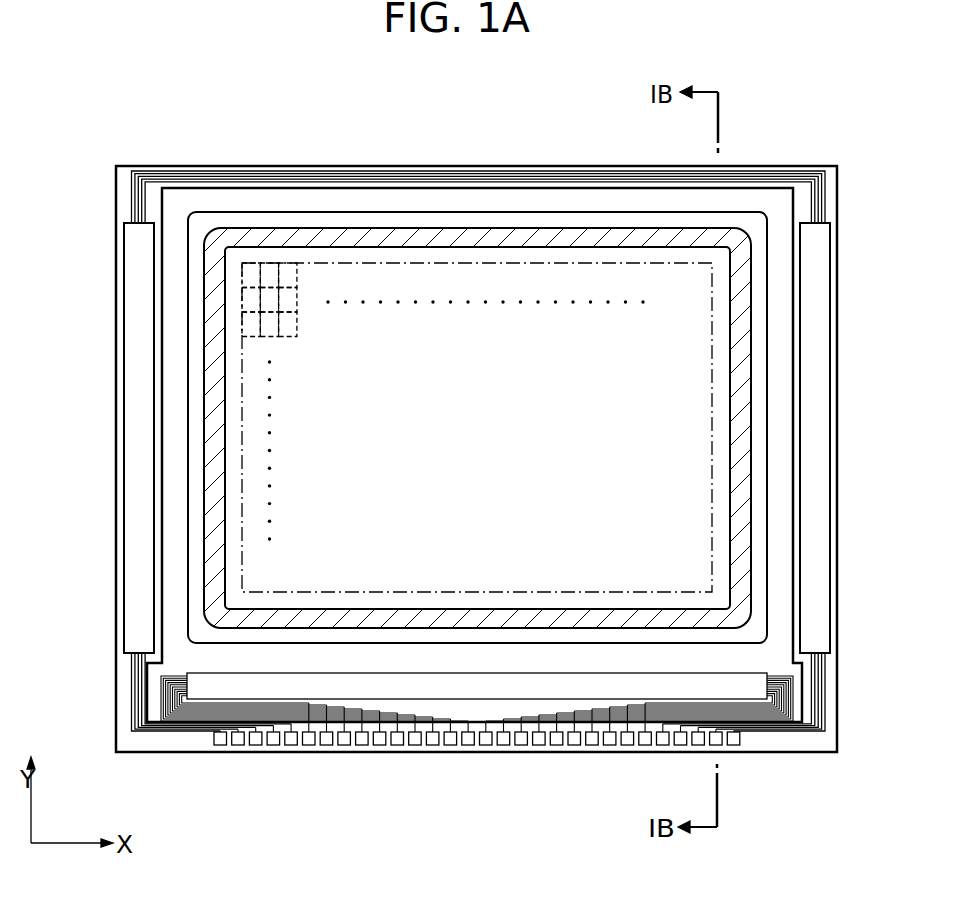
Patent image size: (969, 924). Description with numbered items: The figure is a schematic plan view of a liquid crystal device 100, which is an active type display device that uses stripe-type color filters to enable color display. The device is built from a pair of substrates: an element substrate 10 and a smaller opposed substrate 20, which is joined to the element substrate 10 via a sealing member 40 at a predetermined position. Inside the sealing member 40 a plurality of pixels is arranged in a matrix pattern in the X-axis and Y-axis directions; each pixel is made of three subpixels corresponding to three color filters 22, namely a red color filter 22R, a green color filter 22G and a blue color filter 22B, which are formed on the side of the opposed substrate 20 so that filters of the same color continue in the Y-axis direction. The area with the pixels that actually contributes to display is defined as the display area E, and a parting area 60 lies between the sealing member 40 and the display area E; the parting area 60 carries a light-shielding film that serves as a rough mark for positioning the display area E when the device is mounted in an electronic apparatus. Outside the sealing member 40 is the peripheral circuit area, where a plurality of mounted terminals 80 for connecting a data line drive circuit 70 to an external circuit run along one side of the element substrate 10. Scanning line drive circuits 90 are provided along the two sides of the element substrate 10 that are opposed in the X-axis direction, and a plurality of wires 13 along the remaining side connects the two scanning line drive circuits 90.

The liquid crystal device 100 is at (748, 121).
The element substrate 10 is at (414, 166).
The wires 13 is at (558, 178).
The opposed substrate 20 is at (483, 188).
The color filters 22 is at (357, 106).
The red color filter 22R is at (247, 263).
The green color filter 22G is at (268, 263).
The blue color filter 22B is at (288, 263).
The sealing member 40 is at (780, 426).
The parting area 60 is at (740, 492).
The scanning line drive circuits 90 is at (137, 532).
The display area E is at (243, 400).
The data line drive circuit 70 is at (475, 692).
The mounted terminals 80 is at (605, 741).